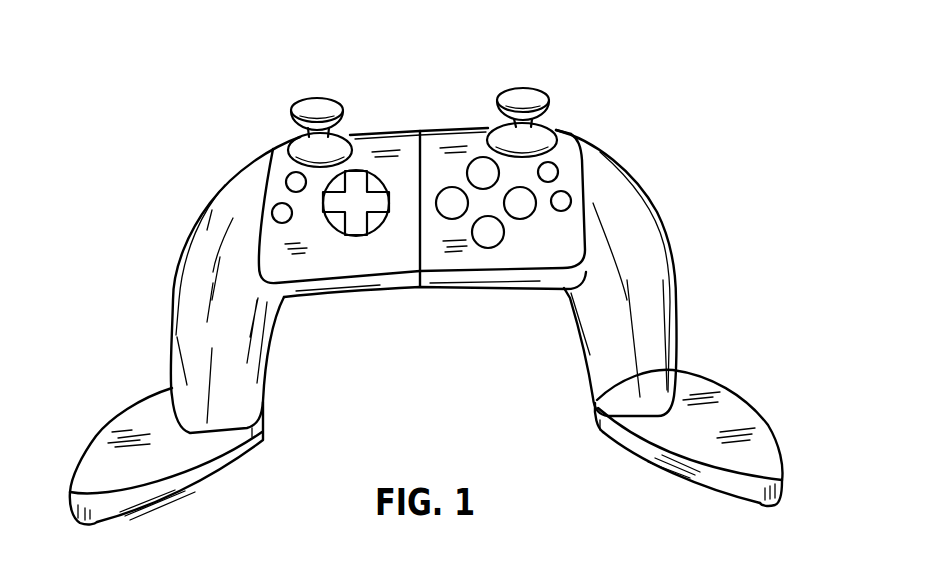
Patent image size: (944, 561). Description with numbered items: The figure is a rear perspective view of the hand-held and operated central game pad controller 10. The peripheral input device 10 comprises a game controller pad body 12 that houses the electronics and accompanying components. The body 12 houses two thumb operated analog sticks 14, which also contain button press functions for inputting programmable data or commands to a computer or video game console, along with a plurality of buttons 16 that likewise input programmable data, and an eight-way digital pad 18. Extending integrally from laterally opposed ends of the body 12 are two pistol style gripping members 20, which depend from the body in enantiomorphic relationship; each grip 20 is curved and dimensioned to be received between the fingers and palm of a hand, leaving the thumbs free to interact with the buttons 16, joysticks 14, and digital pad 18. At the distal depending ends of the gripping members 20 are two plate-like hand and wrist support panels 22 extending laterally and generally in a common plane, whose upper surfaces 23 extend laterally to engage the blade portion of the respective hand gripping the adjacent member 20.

The central game pad controller 10 is at (208, 134).
The game controller pad body 12 is at (427, 122).
The thumb operated analog sticks 14 is at (318, 107).
The buttons 16 is at (278, 212).
The eight-way digital pad 18 is at (355, 212).
The pistol style gripping members 20 is at (173, 297).
The hand and wrist support panels 22 is at (103, 423).
The upper surfaces 23 is at (103, 477).